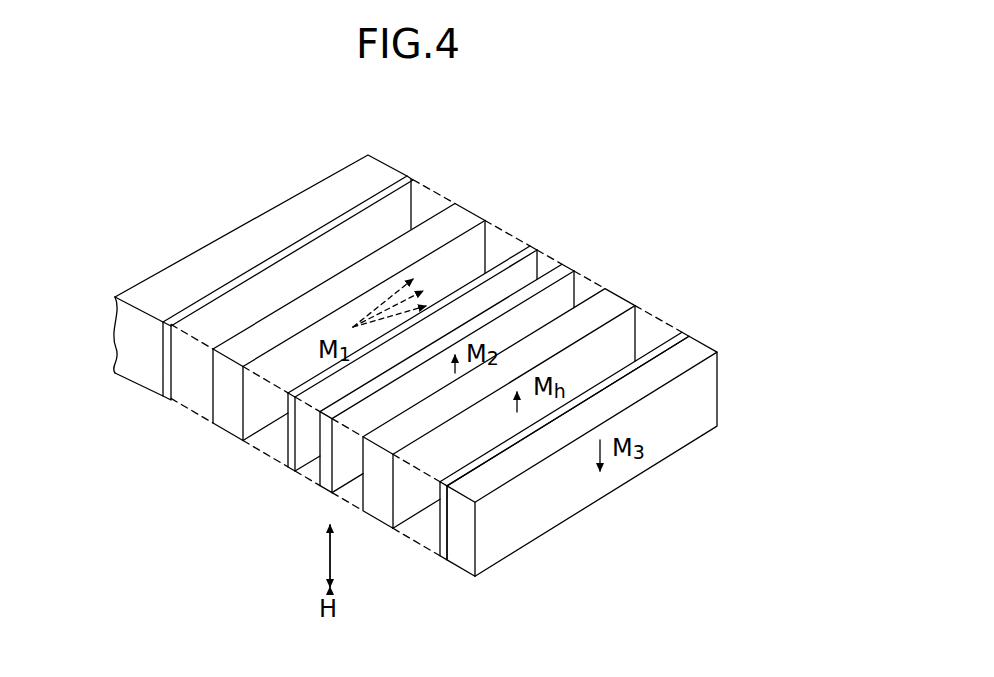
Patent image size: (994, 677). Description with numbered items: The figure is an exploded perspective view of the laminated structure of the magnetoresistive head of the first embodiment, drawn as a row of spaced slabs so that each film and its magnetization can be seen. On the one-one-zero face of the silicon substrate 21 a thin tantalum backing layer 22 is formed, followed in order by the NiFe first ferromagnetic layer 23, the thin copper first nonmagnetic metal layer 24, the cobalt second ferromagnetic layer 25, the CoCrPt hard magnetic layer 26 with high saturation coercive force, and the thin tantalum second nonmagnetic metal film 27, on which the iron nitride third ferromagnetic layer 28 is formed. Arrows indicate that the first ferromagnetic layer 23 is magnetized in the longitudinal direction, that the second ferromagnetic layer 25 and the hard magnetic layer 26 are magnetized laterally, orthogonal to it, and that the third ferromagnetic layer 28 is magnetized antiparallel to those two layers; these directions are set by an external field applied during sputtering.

The silicon substrate 21 is at (177, 272).
The backing layer 22 is at (298, 245).
The first ferromagnetic layer 23 is at (477, 200).
The first nonmagnetic metal layer 24 is at (533, 245).
The second ferromagnetic layer 25 is at (572, 267).
The hard magnetic layer 26 is at (618, 293).
The second nonmagnetic metal film 27 is at (683, 330).
The third ferromagnetic layer 28 is at (717, 378).